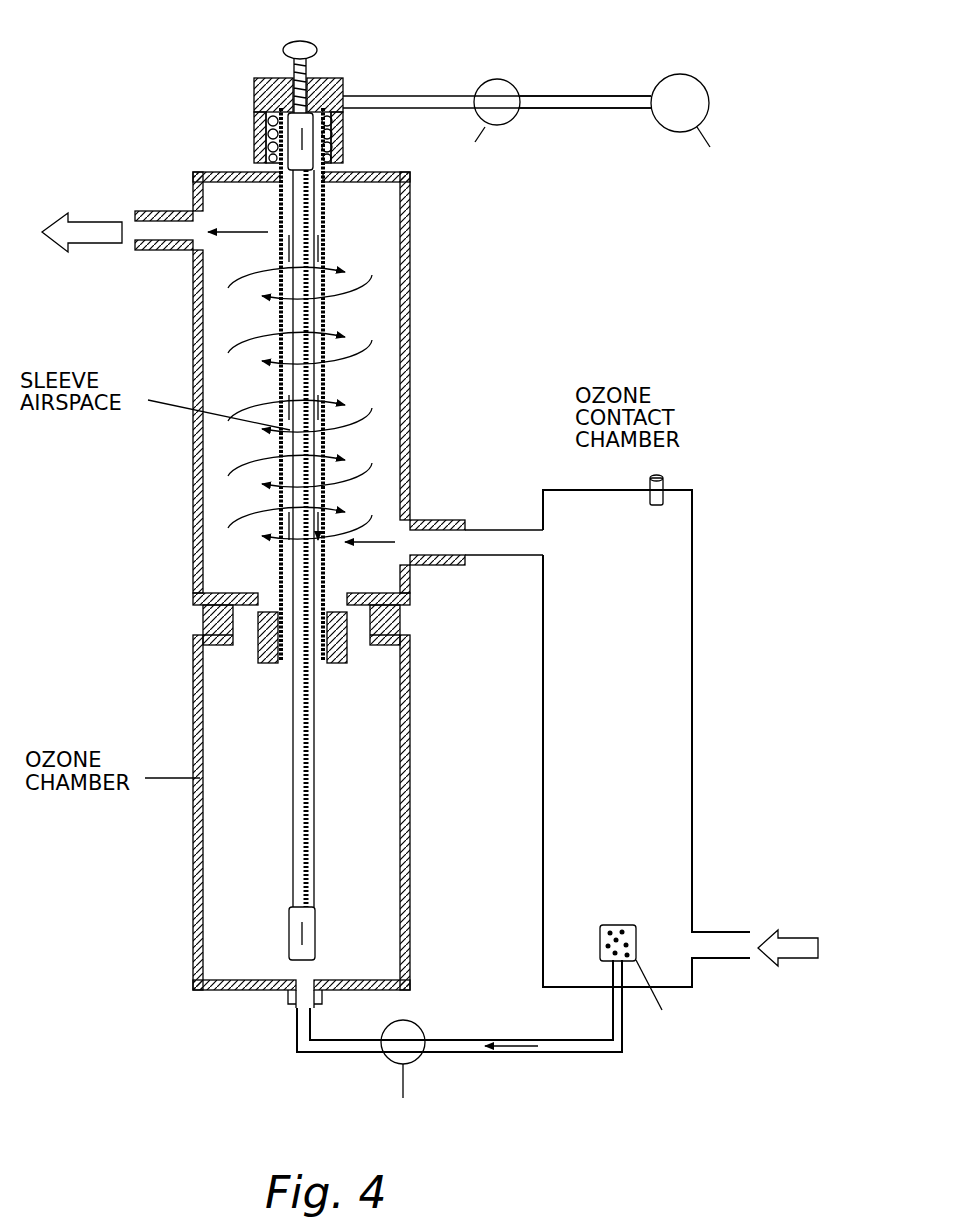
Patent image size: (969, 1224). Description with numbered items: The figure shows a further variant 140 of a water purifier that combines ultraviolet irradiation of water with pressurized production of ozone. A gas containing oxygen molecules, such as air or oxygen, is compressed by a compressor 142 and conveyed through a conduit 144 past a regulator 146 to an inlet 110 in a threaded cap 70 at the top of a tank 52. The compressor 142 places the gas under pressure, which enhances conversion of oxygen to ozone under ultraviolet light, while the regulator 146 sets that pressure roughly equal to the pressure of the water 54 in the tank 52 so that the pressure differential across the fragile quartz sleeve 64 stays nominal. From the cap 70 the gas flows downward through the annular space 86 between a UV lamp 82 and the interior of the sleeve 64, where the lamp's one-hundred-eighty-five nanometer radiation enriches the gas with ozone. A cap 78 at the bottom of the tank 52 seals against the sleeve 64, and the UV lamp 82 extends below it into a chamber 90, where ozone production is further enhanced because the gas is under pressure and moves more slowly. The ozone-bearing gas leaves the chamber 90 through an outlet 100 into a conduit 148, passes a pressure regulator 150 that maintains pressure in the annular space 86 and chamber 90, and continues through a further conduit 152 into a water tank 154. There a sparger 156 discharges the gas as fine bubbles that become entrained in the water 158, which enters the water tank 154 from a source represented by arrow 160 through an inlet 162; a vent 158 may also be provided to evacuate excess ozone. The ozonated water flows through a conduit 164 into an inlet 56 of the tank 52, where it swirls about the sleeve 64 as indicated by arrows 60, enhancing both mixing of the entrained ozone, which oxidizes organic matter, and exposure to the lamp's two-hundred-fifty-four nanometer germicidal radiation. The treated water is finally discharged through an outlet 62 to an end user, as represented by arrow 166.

The variant 140 is at (673, 289).
The tank 52 is at (412, 468).
The water 54 is at (380, 295).
The arrows 60 is at (365, 336).
The sleeve 64 is at (330, 370).
The annular space 86 is at (313, 472).
The UV lamp 82 is at (320, 378).
The threaded cap 70 is at (335, 95).
The inlet 110 is at (345, 102).
The regulator 146 is at (510, 80).
The conduit 144 is at (585, 95).
The compressor 142 is at (688, 78).
The outlet 62 is at (148, 210).
The arrow 166 is at (50, 214).
The inlet 56 is at (452, 510).
The conduit 164 is at (515, 497).
The water tank 154 is at (700, 748).
The water 158 is at (663, 490).
The cap 78 is at (347, 658).
The chamber 90 is at (412, 820).
The outlet 100 is at (307, 985).
The conduit 148 is at (350, 1052).
The pressure regulator 150 is at (421, 1062).
The further conduit 152 is at (497, 1053).
The sparger 156 is at (617, 925).
The inlet 162 is at (728, 930).
The arrow 160 is at (790, 942).